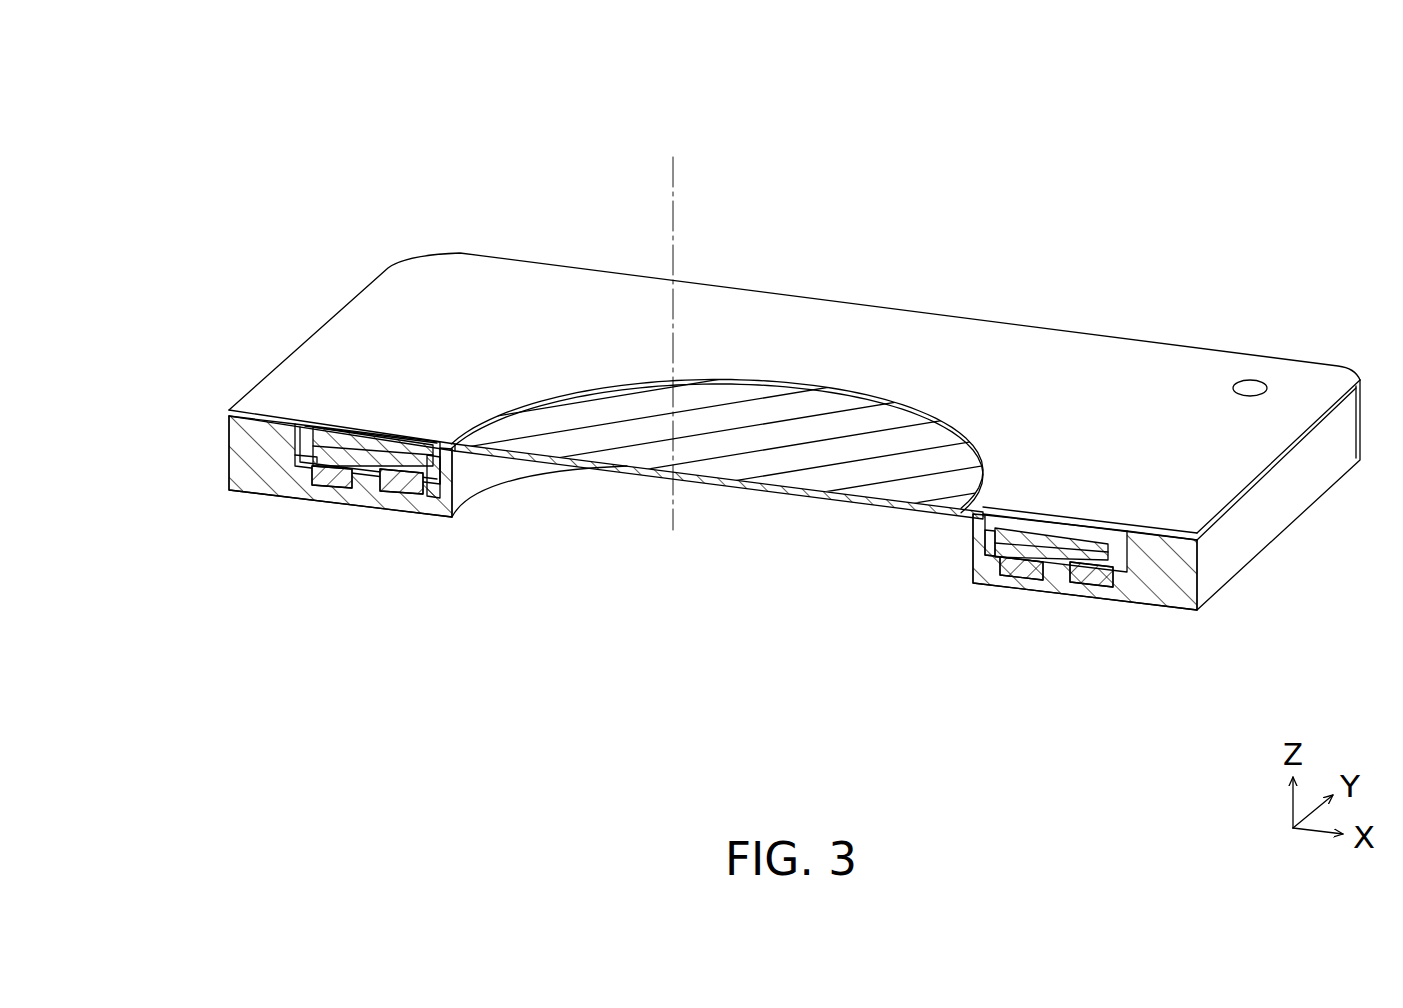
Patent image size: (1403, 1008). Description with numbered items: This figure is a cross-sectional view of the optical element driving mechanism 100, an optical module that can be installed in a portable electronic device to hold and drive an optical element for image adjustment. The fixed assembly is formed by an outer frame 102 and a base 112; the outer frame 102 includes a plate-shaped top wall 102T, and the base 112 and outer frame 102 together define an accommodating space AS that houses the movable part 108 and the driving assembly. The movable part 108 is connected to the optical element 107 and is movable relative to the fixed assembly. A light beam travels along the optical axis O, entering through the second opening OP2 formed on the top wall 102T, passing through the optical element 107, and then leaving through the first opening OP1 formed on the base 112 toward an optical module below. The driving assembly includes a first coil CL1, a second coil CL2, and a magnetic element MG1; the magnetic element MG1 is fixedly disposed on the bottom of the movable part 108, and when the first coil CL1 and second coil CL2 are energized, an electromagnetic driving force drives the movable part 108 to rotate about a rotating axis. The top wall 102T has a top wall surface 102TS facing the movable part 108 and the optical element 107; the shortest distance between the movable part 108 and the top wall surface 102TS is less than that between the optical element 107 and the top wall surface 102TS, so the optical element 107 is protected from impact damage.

The optical element driving mechanism 100 is at (178, 77).
The outer frame 102 is at (286, 348).
The top wall 102T is at (462, 292).
The top wall surface 102TS is at (312, 455).
The optical element 107 is at (352, 424).
The movable part 108 is at (297, 462).
The base 112 is at (1210, 598).
The accommodating space AS is at (297, 443).
The first coil CL1 is at (1023, 567).
The second coil CL2 is at (333, 485).
The magnetic element MG1 is at (398, 465).
The first opening OP1 is at (463, 497).
The second opening OP2 is at (603, 378).
The optical axis O is at (674, 325).